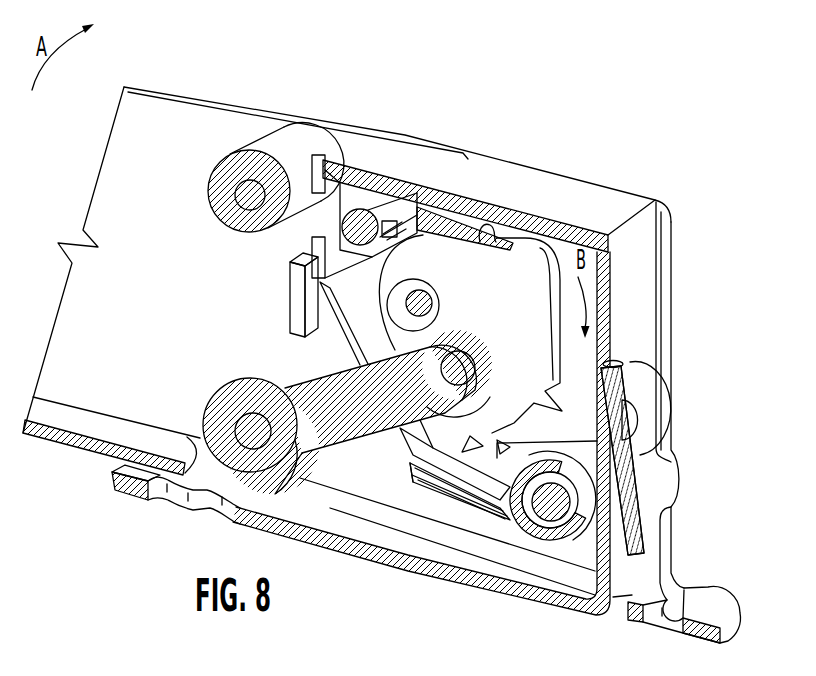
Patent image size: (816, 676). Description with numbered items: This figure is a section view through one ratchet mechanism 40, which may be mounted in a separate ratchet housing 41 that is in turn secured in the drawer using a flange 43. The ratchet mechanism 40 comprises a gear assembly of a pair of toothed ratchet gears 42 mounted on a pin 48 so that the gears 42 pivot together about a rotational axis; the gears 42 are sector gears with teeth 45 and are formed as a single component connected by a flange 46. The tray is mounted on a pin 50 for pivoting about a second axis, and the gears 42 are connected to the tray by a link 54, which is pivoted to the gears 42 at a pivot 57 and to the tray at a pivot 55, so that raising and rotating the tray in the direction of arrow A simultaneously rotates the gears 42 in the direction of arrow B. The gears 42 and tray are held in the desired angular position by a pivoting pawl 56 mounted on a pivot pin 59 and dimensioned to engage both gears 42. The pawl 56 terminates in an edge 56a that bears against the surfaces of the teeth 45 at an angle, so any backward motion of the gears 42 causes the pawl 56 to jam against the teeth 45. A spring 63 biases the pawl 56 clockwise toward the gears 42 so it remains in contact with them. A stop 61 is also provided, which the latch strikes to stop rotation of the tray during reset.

The ratchet mechanism 40 is at (693, 263).
The ratchet housing 41 is at (668, 363).
The toothed ratchet gears 42 is at (525, 282).
The flange 43 is at (728, 592).
The teeth 45 is at (466, 451).
The flange 46 is at (476, 213).
The pin 48 is at (430, 297).
The pin 50 is at (255, 190).
The link 54 is at (328, 425).
The pivot 55 is at (217, 385).
The pawl 56 is at (450, 503).
The edge 56a is at (412, 467).
The pivot 57 is at (490, 365).
The pivot pin 59 is at (533, 528).
The stop 61 is at (411, 210).
The spring 63 is at (595, 478).